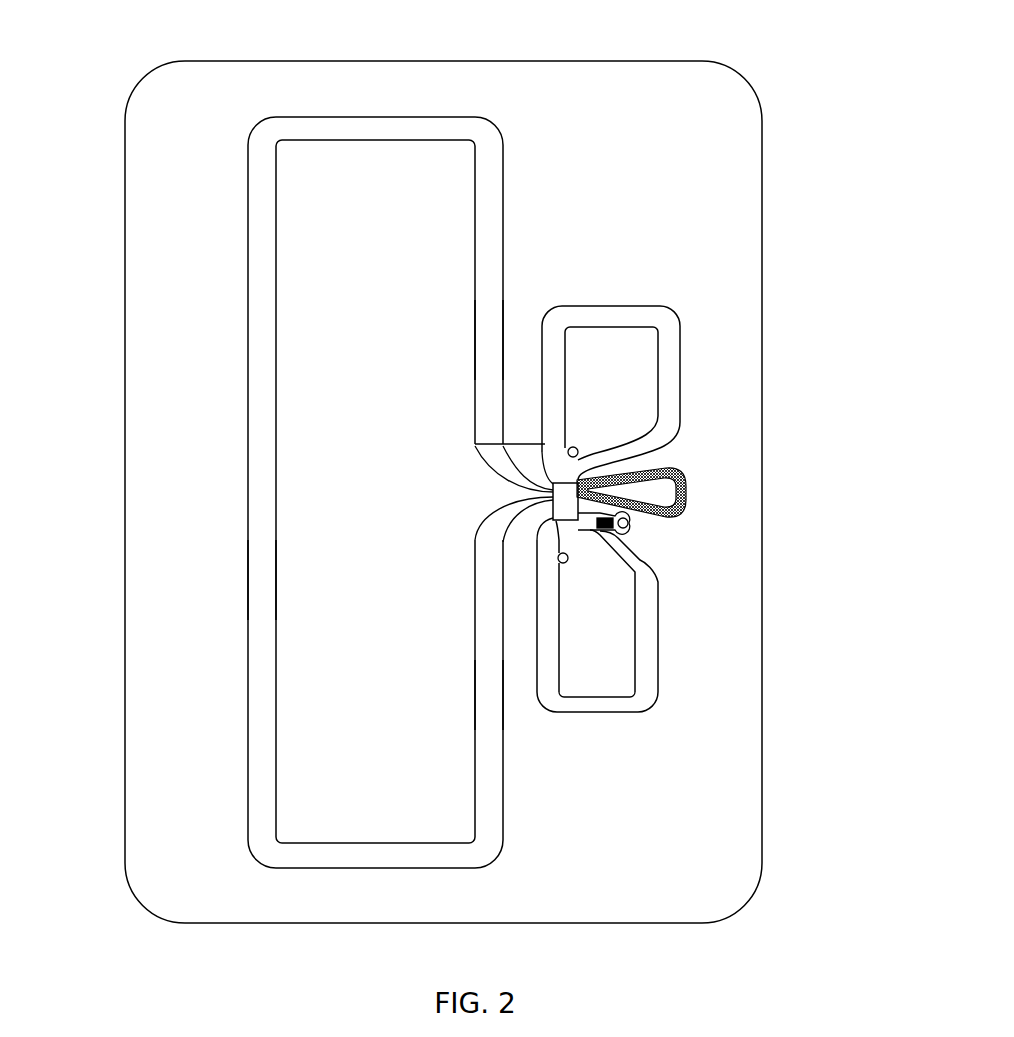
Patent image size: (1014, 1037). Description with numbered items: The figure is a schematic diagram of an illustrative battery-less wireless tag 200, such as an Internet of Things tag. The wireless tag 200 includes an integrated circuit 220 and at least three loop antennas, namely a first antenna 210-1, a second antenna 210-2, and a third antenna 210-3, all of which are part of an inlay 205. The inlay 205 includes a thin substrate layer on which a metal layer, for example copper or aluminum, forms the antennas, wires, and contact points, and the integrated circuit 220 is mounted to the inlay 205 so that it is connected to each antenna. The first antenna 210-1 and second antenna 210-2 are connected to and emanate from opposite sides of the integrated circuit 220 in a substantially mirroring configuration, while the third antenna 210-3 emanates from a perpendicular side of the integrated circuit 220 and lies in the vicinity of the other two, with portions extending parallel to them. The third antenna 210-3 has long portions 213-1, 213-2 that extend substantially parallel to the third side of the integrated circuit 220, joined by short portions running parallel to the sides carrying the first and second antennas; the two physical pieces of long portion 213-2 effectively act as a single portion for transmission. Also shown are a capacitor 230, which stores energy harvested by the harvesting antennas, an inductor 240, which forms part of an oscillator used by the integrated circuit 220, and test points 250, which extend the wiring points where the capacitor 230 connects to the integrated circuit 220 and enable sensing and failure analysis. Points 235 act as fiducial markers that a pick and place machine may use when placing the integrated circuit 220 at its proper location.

The wireless tag 200 is at (496, 470).
The inlay 205 is at (725, 255).
The first antenna 210-1 is at (672, 403).
The second antenna 210-2 is at (648, 690).
The third antenna 210-3 is at (258, 404).
The long portion 213-1 is at (258, 580).
The long portion 213-2 is at (487, 337).
The integrated circuit 220 is at (563, 503).
The capacitor 230 is at (605, 529).
The points 235 is at (560, 452).
The inductor 240 is at (686, 490).
The test points 250 is at (629, 523).